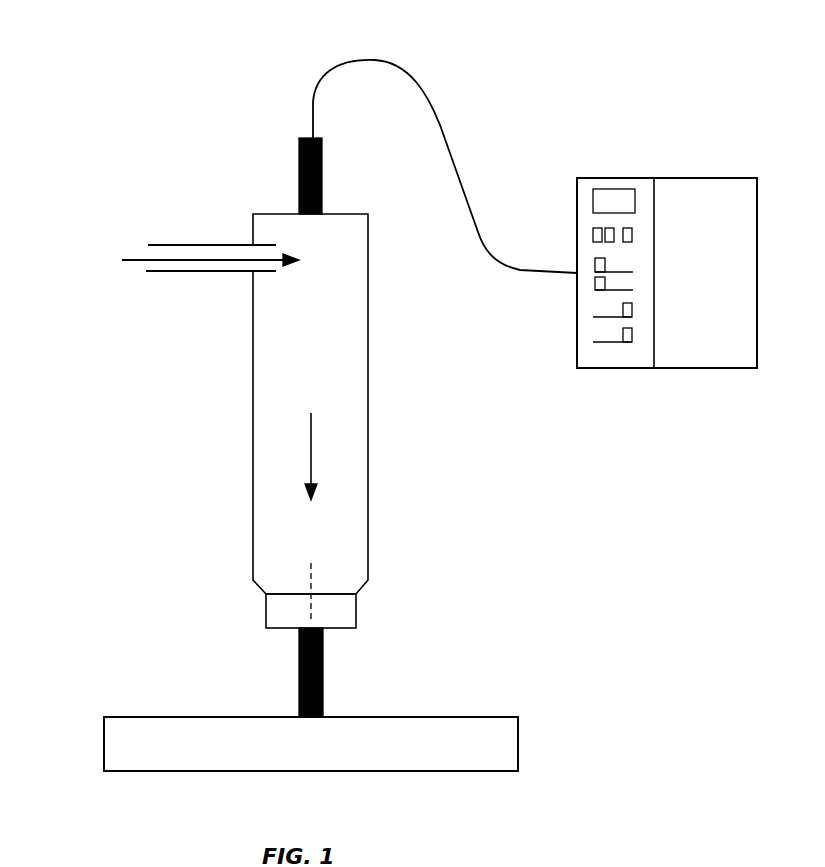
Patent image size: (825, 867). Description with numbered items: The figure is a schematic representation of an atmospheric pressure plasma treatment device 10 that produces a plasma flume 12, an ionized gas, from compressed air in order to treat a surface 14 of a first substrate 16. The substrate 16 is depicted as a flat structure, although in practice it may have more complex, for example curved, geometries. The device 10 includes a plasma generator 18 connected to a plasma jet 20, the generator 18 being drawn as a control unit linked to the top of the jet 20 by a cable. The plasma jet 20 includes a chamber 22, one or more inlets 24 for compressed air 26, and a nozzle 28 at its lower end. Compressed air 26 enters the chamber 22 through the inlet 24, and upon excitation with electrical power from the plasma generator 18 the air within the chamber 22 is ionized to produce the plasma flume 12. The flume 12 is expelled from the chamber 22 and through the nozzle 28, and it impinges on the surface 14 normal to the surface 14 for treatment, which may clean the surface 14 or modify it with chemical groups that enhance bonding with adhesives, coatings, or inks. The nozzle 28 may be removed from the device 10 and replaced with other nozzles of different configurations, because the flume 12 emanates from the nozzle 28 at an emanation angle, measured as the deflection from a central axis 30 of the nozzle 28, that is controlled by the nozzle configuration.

The plasma treatment device 10 is at (142, 83).
The plasma flume 12 is at (311, 458).
The surface 14 is at (192, 717).
The first substrate 16 is at (500, 745).
The plasma generator 18 is at (735, 183).
The plasma jet 20 is at (350, 366).
The chamber 22 is at (355, 303).
The inlet 24 is at (196, 245).
The compressed air 26 is at (212, 262).
The nozzle 28 is at (266, 611).
The central axis 30 is at (311, 578).